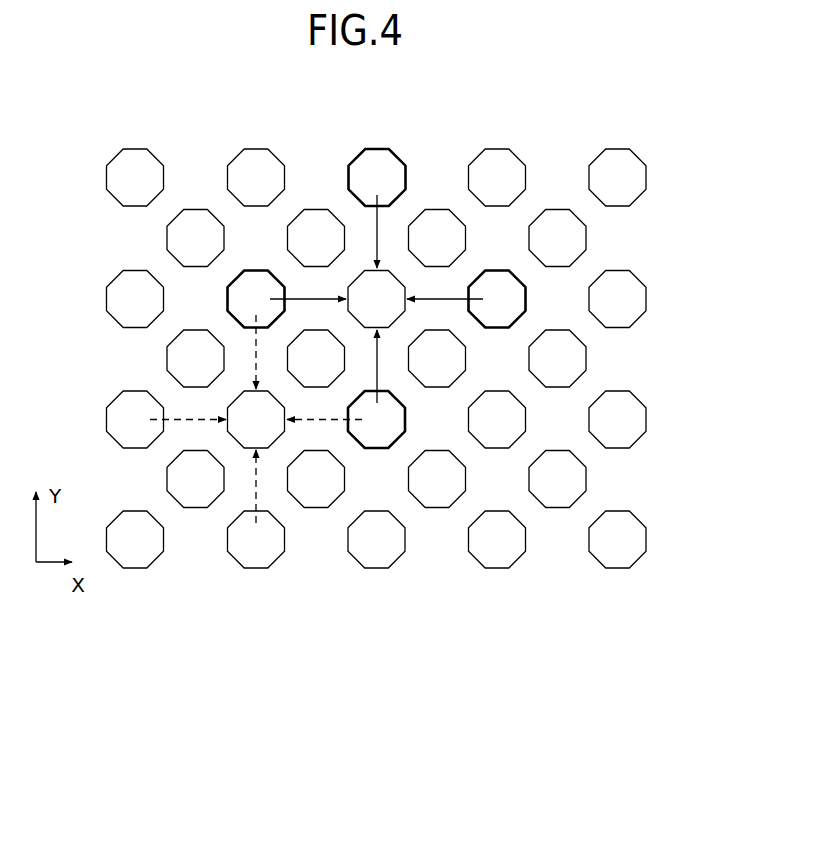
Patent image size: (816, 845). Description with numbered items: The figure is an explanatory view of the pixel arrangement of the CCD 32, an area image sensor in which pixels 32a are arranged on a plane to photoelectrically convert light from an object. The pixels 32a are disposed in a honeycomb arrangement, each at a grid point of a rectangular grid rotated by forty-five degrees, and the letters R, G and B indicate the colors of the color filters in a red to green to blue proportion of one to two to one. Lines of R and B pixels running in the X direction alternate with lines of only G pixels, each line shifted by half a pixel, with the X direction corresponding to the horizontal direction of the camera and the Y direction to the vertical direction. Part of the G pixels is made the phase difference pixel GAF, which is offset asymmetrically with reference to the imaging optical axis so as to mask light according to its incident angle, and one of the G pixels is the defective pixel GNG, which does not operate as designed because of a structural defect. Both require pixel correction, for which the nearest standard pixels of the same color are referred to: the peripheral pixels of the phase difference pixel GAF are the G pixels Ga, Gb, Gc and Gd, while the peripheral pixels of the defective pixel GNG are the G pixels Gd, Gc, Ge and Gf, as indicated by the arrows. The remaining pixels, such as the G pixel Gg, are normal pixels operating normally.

The CCD 32 is at (377, 435).
The pixels 32a is at (512, 162).
The G pixel Ga is at (497, 299).
The G pixel Gb is at (377, 177).
The G pixel Gc is at (256, 299).
The G pixel Gd is at (376, 419).
The G pixel Ge is at (135, 419).
The G pixel Gf is at (256, 539).
The G pixel Gg is at (256, 177).
The phase difference pixel GAF is at (376, 299).
The defective pixel GNG is at (256, 419).